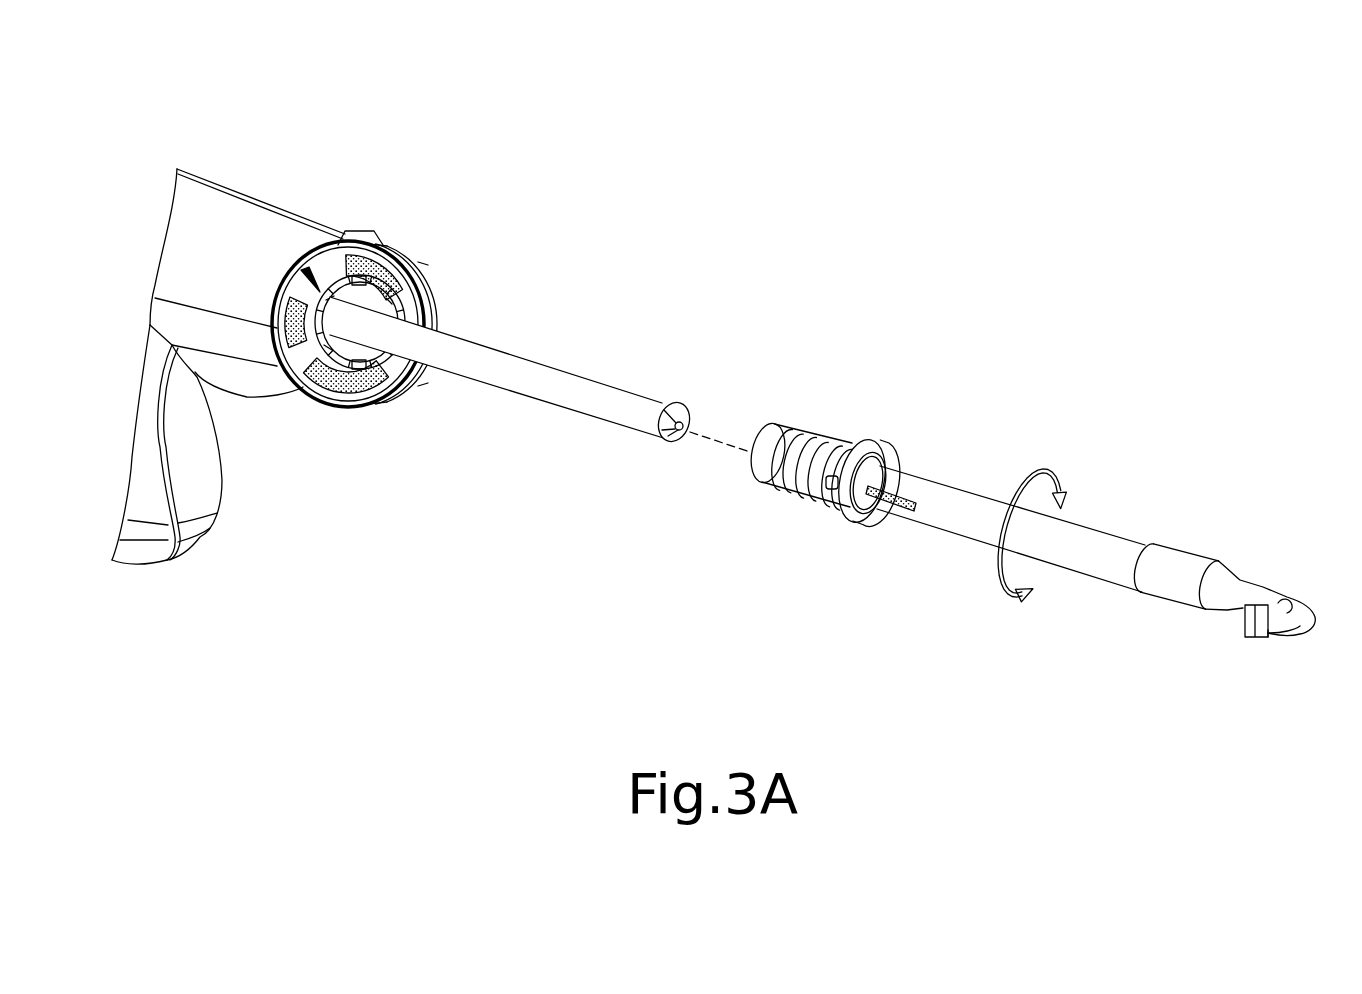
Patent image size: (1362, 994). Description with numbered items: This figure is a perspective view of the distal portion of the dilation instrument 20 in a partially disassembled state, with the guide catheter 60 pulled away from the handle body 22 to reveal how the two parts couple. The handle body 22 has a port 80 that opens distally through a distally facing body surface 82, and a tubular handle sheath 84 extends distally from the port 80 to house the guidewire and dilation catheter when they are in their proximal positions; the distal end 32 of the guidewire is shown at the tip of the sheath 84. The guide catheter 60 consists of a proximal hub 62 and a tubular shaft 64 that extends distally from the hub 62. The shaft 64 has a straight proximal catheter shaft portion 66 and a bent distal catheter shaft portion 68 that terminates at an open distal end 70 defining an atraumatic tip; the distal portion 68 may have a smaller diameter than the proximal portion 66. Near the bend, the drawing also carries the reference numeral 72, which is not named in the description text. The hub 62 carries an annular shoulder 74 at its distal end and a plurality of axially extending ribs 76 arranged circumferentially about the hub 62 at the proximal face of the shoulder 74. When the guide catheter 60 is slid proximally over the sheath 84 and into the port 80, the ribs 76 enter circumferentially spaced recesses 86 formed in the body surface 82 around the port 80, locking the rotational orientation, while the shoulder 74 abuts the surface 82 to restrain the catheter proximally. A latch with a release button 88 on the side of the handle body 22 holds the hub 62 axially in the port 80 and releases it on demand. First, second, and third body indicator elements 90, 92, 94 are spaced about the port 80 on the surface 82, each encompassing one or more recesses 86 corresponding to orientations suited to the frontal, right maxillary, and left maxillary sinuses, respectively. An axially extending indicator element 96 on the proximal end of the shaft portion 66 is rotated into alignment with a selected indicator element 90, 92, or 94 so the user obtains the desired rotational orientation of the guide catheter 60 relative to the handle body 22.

The dilation instrument 20 is at (563, 112).
The handle body 22 is at (192, 172).
The distal end of guidewire 32 is at (690, 419).
The guide catheter 60 is at (1036, 375).
The proximal hub 62 is at (815, 430).
The tubular shaft 64 is at (950, 460).
The straight proximal catheter shaft portion 66 is at (1110, 535).
The bent distal catheter shaft portion 68 is at (1274, 630).
The open distal end 70 is at (1243, 627).
The elbow 72 is at (1316, 606).
The annular shoulder 74 is at (848, 510).
The axially extending ribs 76 is at (866, 446).
The port 80 is at (300, 262).
The distally facing body surface 82 is at (336, 263).
The tubular handle sheath 84 is at (480, 343).
The recesses 86 is at (307, 340).
The release button 88 is at (438, 294).
The first body indicator element 90 is at (290, 345).
The second body indicator element 92 is at (383, 250).
The third body indicator element 94 is at (362, 402).
The indicator element 96 is at (903, 505).